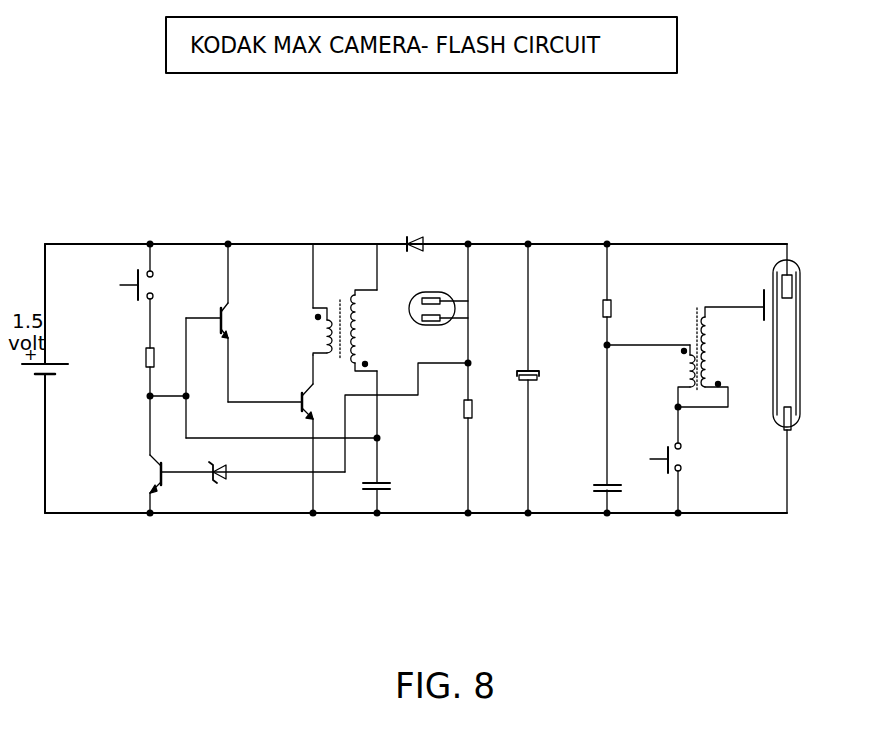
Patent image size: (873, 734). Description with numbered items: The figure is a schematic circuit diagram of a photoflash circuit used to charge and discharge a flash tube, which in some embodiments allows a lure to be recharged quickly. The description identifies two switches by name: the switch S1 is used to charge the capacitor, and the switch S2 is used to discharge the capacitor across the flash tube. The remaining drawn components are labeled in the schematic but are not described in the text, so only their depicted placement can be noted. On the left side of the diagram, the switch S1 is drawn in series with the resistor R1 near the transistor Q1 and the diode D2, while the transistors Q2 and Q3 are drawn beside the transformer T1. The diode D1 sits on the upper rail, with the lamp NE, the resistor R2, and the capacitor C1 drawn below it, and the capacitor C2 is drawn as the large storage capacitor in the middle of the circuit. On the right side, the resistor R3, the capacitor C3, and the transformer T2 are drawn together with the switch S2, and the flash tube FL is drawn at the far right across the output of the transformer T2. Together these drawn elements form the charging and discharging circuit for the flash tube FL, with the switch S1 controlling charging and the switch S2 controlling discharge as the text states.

The switch S1 is at (120, 285).
The resistor 150K R1 is at (125, 360).
The transistor MPS 2002 Q1 is at (104, 466).
The zener diode D2 is at (253, 482).
The transistor 2SD965 Q2 is at (245, 312).
The transistor 2N3904 Q3 is at (272, 382).
The step-up transformer T1 is at (345, 318).
The rectifier diode D1 is at (419, 232).
The neon indicator lamp NE is at (438, 322).
The resistor 3M9 R2 is at (447, 412).
The capacitor 470 pF C1 is at (412, 486).
The main storage capacitor 160uF 350V C2 is at (551, 391).
The trigger capacitor 22 nF C3 is at (578, 475).
The resistor 1M R3 is at (625, 306).
The trigger transformer T2 is at (721, 311).
The switch S2 is at (684, 452).
The flash tube FL is at (796, 345).